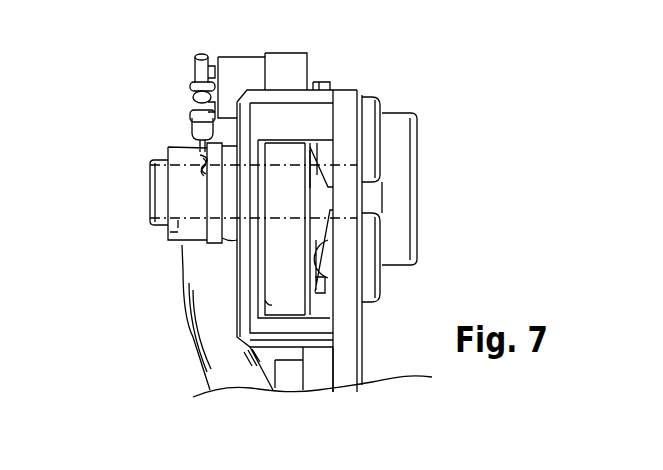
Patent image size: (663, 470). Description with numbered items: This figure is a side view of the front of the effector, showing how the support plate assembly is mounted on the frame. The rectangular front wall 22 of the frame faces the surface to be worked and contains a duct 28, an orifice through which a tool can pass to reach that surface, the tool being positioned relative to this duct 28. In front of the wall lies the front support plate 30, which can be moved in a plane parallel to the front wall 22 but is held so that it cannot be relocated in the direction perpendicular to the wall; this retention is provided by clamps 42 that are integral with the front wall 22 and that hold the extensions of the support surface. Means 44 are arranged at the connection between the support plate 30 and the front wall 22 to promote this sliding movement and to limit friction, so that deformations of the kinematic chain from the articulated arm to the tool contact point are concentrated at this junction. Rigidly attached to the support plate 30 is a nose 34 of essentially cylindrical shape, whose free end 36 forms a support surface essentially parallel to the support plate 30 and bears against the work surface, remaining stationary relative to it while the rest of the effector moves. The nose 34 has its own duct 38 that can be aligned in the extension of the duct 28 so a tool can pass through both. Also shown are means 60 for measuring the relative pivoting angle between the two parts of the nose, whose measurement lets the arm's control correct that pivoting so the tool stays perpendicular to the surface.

The means for measuring the relative pivoting angle 60 is at (237, 52).
The front support plate 30 is at (292, 68).
The front wall 22 is at (343, 110).
The duct 28 is at (352, 195).
The means to promote movement and limit friction 44 is at (325, 152).
The nose 34 is at (177, 148).
The free end 36 is at (150, 188).
The duct 38 is at (167, 233).
The clamps 42 is at (247, 312).